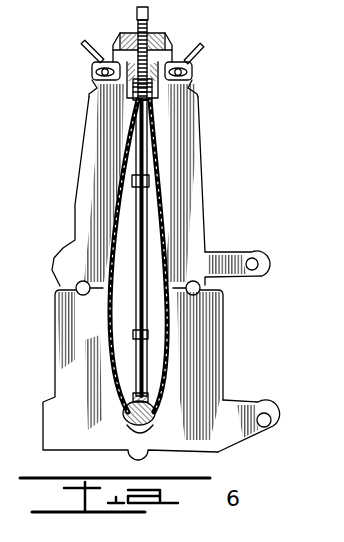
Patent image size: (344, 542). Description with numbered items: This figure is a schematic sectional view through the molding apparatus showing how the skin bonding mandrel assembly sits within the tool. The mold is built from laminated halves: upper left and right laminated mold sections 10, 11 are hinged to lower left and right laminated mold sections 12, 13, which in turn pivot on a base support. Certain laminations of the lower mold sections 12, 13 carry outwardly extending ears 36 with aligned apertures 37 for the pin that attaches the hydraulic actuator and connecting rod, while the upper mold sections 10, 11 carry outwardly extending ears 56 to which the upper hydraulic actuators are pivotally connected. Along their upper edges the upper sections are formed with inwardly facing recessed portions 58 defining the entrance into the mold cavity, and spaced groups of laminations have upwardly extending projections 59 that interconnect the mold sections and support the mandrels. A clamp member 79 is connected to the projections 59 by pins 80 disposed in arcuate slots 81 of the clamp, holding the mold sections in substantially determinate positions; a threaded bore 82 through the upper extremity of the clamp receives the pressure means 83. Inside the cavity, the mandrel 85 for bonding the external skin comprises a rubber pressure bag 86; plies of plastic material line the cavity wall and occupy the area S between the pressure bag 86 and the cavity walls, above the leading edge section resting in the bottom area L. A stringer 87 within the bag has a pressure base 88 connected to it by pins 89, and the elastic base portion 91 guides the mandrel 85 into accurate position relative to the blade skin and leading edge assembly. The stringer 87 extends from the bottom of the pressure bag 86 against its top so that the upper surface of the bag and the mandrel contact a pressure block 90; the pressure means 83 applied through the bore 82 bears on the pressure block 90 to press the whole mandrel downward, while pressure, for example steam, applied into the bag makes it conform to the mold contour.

The upper left laminated mold section 10 is at (91, 133).
The upper right laminated mold section 11 is at (201, 133).
The lower left laminated mold section 12 is at (57, 349).
The lower right laminated mold section 13 is at (223, 349).
The outwardly extending ears 36 is at (243, 406).
The aligned apertures 37 is at (268, 424).
The outwardly extending ears 56 is at (232, 254).
The inwardly facing recessed portions 58 is at (130, 96).
The upwardly extending projections 59 is at (108, 85).
The clamp member 79 is at (176, 49).
The pins 80 is at (190, 66).
The arcuate slots 81 is at (96, 68).
The threaded bore 82 is at (158, 40).
The pressure means 83 is at (138, 22).
The mandrel 85 is at (132, 222).
The pressure bag 86 is at (165, 228).
The stringer 87 is at (146, 210).
The pressure base 88 is at (157, 413).
The pins 89 is at (148, 399).
The pressure block 90 is at (155, 97).
The base portion 91 is at (126, 416).
The area S is at (130, 426).
The bottom area L is at (145, 436).